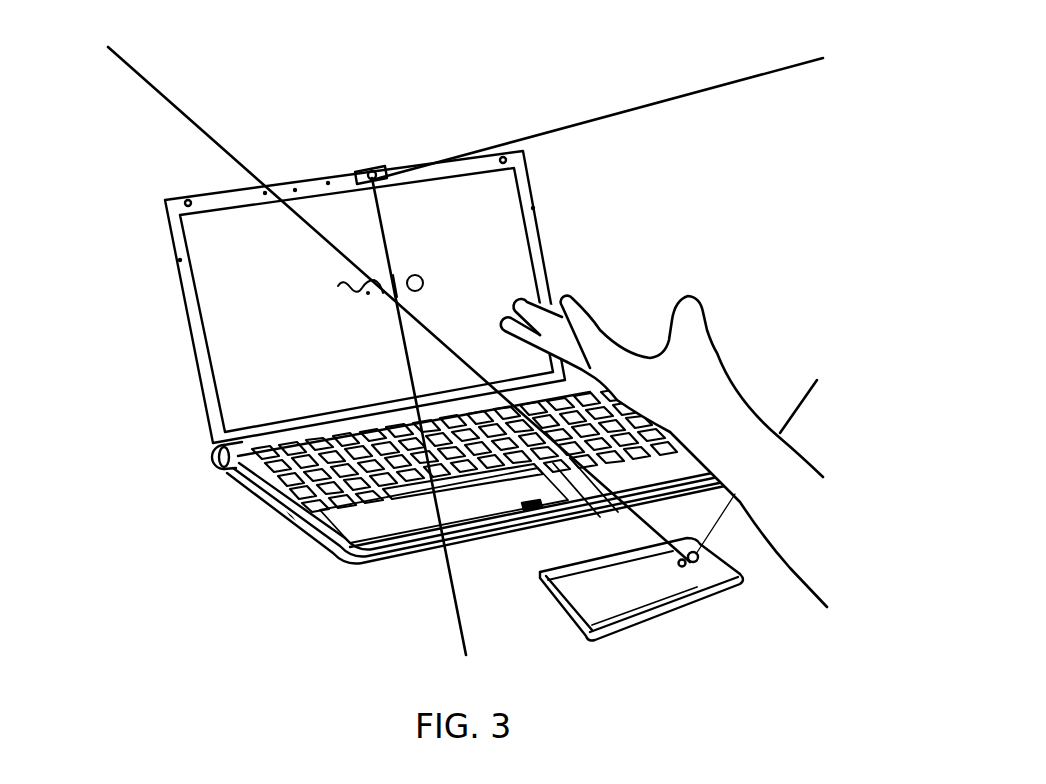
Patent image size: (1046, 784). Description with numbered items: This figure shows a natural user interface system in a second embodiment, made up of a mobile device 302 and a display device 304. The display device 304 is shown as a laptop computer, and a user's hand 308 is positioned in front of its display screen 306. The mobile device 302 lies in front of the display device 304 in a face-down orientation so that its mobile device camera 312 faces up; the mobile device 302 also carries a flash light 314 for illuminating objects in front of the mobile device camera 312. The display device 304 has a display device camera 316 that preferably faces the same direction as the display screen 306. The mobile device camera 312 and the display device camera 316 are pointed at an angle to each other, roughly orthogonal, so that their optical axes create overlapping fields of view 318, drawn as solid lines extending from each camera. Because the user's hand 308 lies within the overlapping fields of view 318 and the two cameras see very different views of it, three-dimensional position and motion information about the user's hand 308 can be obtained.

The mobile device 302 is at (569, 583).
The display device 304 is at (393, 353).
The display screen 306 is at (215, 267).
The user's hand 308 is at (640, 304).
The mobile device camera 312 is at (697, 563).
The flash light 314 is at (540, 572).
The display device camera 316 is at (358, 172).
The overlapping fields of view 318 is at (172, 102).